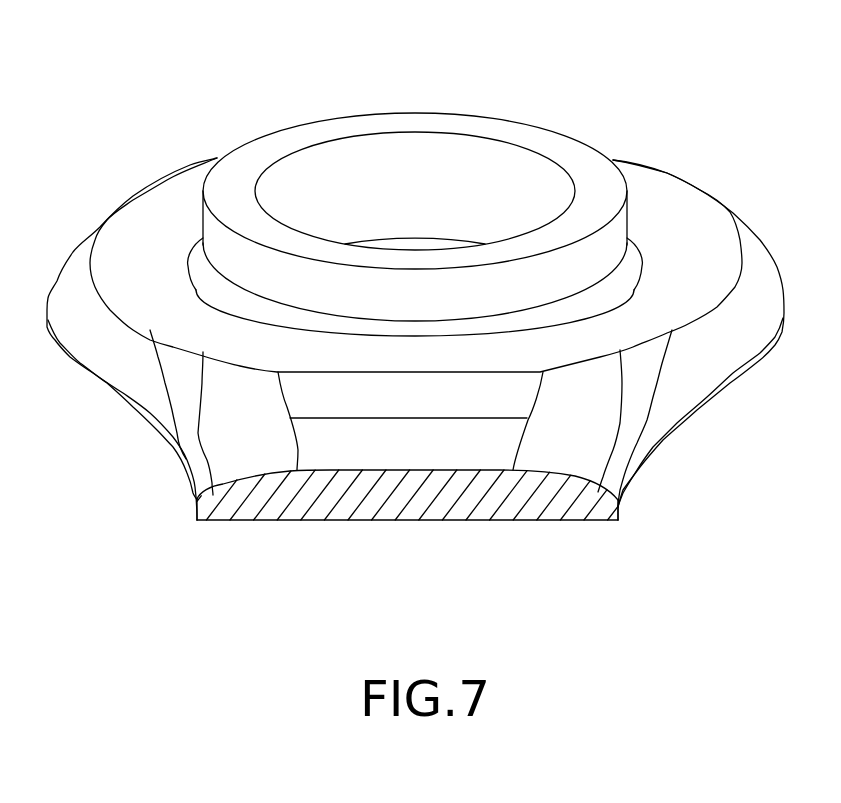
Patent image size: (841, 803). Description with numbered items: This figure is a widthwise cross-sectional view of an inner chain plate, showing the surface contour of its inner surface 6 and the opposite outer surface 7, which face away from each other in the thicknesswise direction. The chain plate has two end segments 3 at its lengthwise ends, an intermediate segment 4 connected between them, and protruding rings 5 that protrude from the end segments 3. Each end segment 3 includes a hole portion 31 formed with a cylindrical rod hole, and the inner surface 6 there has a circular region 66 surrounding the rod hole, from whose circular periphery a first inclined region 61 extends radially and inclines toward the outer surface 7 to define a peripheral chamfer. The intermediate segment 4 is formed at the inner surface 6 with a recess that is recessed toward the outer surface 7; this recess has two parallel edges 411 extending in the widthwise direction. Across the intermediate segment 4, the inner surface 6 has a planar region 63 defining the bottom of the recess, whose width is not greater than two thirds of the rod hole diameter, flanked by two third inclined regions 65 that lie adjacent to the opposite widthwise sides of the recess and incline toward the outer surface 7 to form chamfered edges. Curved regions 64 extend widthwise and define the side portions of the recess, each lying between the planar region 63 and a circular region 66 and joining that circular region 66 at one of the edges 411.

The end segment 3 is at (466, 102).
The protruding ring 5 is at (525, 133).
The edge of the recess 411 is at (412, 372).
The curved region 64 is at (355, 392).
The inner surface 6 is at (155, 218).
The hole portion 31 is at (655, 201).
The circular region 66 is at (675, 223).
The first inclined region 61 is at (710, 335).
The third inclined region 65 is at (237, 447).
The planar region 63 is at (424, 453).
The intermediate segment 4 is at (509, 527).
The outer surface 7 is at (337, 522).